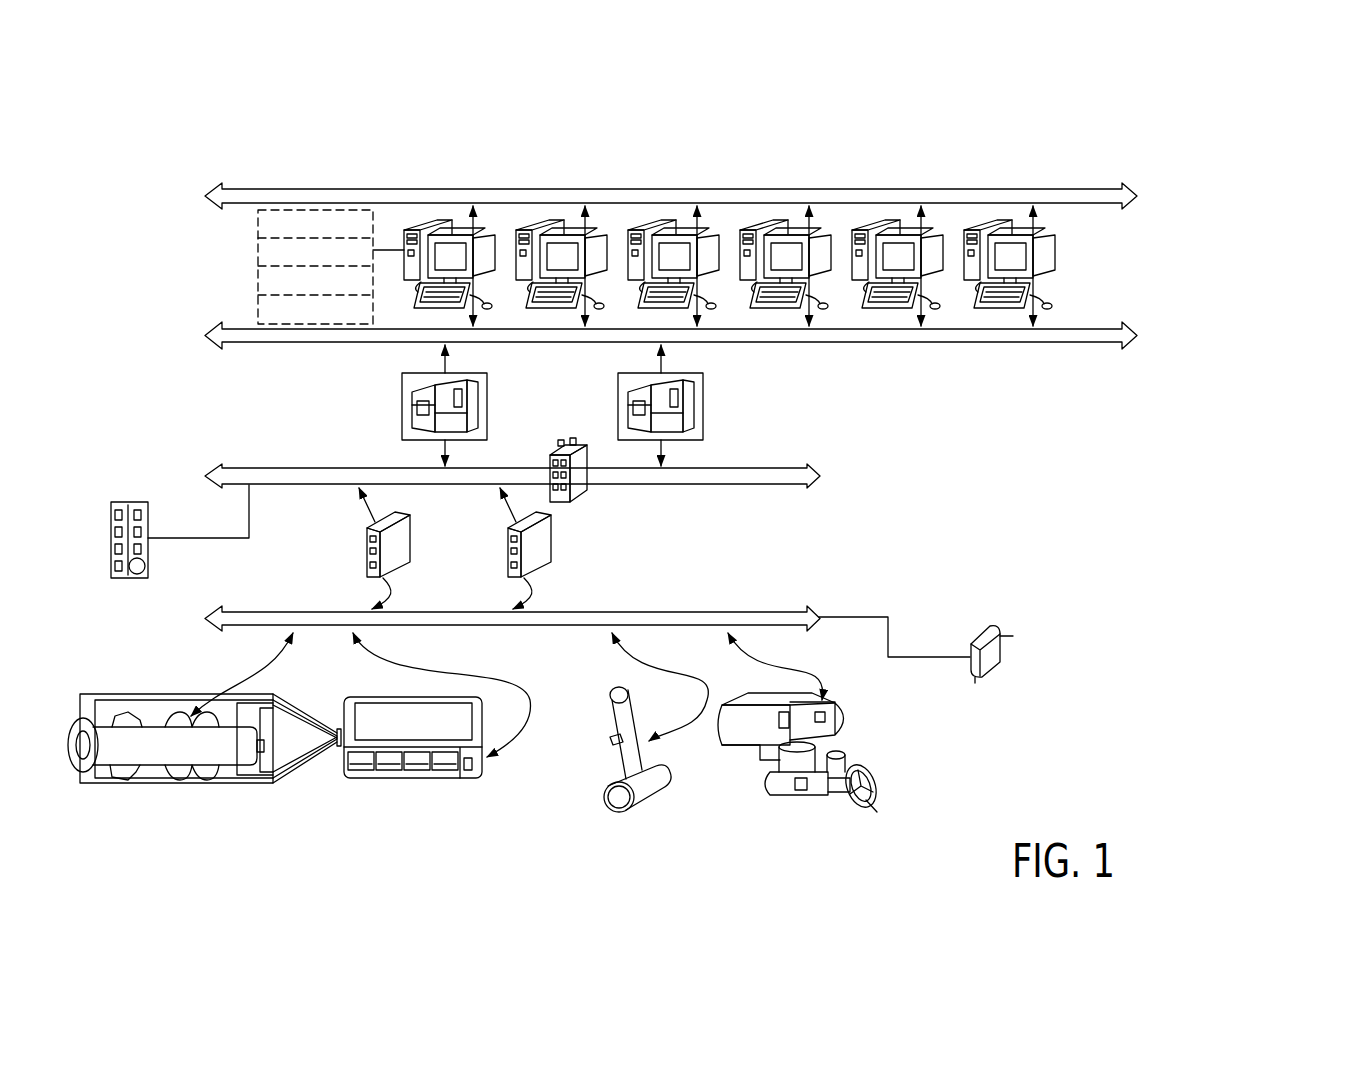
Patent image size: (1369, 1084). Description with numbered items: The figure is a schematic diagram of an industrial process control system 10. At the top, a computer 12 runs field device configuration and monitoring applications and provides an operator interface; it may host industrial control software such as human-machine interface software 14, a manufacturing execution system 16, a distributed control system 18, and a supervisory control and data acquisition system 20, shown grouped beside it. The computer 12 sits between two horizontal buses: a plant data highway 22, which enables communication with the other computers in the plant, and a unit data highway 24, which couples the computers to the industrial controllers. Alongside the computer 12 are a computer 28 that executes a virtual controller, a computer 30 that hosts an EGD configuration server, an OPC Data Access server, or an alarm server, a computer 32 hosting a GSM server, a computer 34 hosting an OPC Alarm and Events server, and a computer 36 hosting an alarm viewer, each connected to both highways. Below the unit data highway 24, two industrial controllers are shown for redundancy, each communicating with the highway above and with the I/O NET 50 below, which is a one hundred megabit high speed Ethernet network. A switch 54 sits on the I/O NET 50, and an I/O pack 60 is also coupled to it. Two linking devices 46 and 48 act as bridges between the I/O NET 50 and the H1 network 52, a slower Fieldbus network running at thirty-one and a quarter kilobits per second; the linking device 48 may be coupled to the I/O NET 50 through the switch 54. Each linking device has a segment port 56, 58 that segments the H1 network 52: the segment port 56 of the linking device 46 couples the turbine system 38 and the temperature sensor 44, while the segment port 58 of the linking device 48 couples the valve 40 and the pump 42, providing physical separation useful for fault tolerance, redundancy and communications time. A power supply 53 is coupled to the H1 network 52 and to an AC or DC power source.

The industrial process control system 10 is at (711, 493).
The computer 12 is at (424, 224).
The human-machine interface (HMI) software 14 is at (257, 227).
The manufacturing execution system (MES) 16 is at (257, 256).
The distributed control system (DCS) 18 is at (257, 284).
The supervisor control and data acquisition (SCADA) system 20 is at (257, 312).
The plant data highway 22 is at (1131, 189).
The unit data highway 24 is at (1131, 331).
The computer 28 is at (536, 224).
The computer 30 is at (648, 224).
The computer 32 is at (760, 224).
The computer 34 is at (872, 224).
The computer 36 is at (984, 224).
The turbine system 38 is at (232, 790).
The valve 40 is at (645, 806).
The pump 42 is at (875, 798).
The temperature sensor 44 is at (443, 778).
The linking device 46 is at (405, 541).
The linking device 48 is at (546, 541).
The I/O NET 50 is at (814, 485).
The H1 network 52 is at (813, 628).
The power supply 53 is at (980, 633).
The switch 54 is at (582, 500).
The segment port 56 is at (355, 578).
The segment port 58 is at (496, 578).
The I/O pack 60 is at (117, 502).